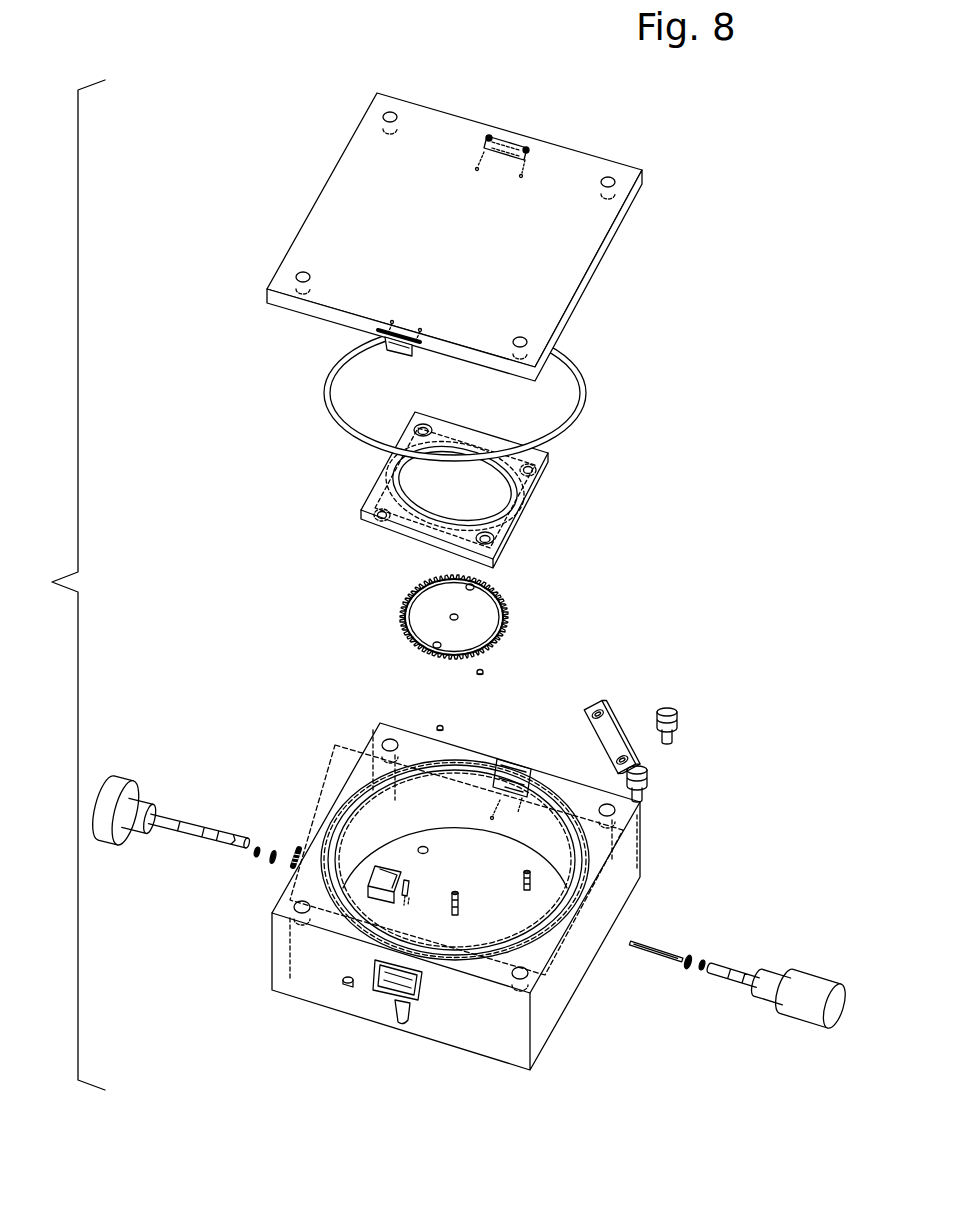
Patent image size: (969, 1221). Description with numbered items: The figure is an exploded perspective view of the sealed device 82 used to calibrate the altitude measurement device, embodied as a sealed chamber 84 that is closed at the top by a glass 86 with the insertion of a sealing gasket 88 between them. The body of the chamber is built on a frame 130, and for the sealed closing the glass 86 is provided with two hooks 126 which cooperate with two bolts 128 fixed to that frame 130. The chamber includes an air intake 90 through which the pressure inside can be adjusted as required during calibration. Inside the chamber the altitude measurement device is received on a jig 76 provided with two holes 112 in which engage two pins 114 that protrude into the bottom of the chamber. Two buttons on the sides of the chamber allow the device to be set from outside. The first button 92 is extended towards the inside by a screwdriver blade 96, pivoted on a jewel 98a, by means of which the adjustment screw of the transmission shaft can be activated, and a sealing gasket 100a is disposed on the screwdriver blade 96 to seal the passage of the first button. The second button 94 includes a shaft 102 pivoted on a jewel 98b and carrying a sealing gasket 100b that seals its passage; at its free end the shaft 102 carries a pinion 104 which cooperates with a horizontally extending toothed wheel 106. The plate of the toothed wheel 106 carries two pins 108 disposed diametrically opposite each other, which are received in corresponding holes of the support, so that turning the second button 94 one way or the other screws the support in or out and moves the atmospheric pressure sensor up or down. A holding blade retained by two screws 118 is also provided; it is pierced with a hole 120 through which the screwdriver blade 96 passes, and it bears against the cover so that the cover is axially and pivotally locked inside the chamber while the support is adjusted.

The sealed device 82 is at (692, 137).
The sealed chamber 84 is at (58, 585).
The jig 76 is at (528, 508).
The glass 86 is at (600, 262).
The sealing gasket 88 is at (575, 400).
The air intake 90 is at (348, 986).
The first button 92 is at (808, 985).
The second button 94 is at (127, 790).
The screwdriver blade 96 is at (660, 950).
The jewel 98a is at (701, 972).
The jewel 98b is at (256, 858).
The sealing gasket 100a is at (689, 960).
The sealing gasket 100b is at (272, 850).
The shaft 102 is at (192, 828).
The pinion 104 is at (295, 848).
The toothed wheel 106 is at (500, 620).
The pins 108 is at (484, 673).
The holes 112 is at (405, 897).
The pins 114 is at (532, 462).
The screws 118 is at (600, 745).
The hole 120 is at (673, 705).
The hooks 126 is at (520, 140).
The bolts 128 is at (520, 765).
The frame 130 is at (616, 881).